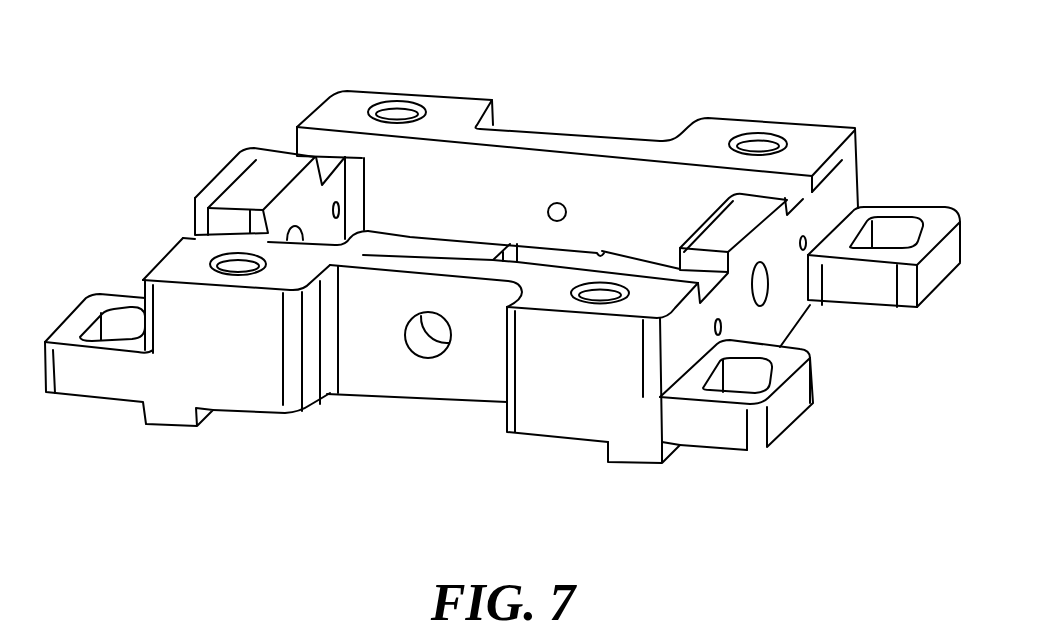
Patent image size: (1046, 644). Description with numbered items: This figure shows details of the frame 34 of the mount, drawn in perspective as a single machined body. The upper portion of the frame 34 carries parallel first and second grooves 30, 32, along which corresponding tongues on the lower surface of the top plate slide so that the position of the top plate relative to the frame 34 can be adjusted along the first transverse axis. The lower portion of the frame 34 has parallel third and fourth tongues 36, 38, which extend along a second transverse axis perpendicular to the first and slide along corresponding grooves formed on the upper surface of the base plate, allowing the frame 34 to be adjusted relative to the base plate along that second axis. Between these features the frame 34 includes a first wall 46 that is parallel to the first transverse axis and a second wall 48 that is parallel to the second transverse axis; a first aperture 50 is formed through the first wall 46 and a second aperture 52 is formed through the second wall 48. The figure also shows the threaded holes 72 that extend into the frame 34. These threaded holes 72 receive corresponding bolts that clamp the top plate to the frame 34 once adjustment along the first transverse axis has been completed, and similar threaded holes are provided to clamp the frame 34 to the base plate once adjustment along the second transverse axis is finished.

The first groove 30 is at (183, 237).
The second groove 32 is at (812, 199).
The frame 34 is at (195, 212).
The third tongue 36 is at (170, 426).
The fourth tongue 38 is at (637, 463).
The first wall 46 is at (366, 357).
The second wall 48 is at (772, 320).
The first aperture 50 is at (425, 343).
The second aperture 52 is at (764, 293).
The threaded holes 72 is at (403, 90).